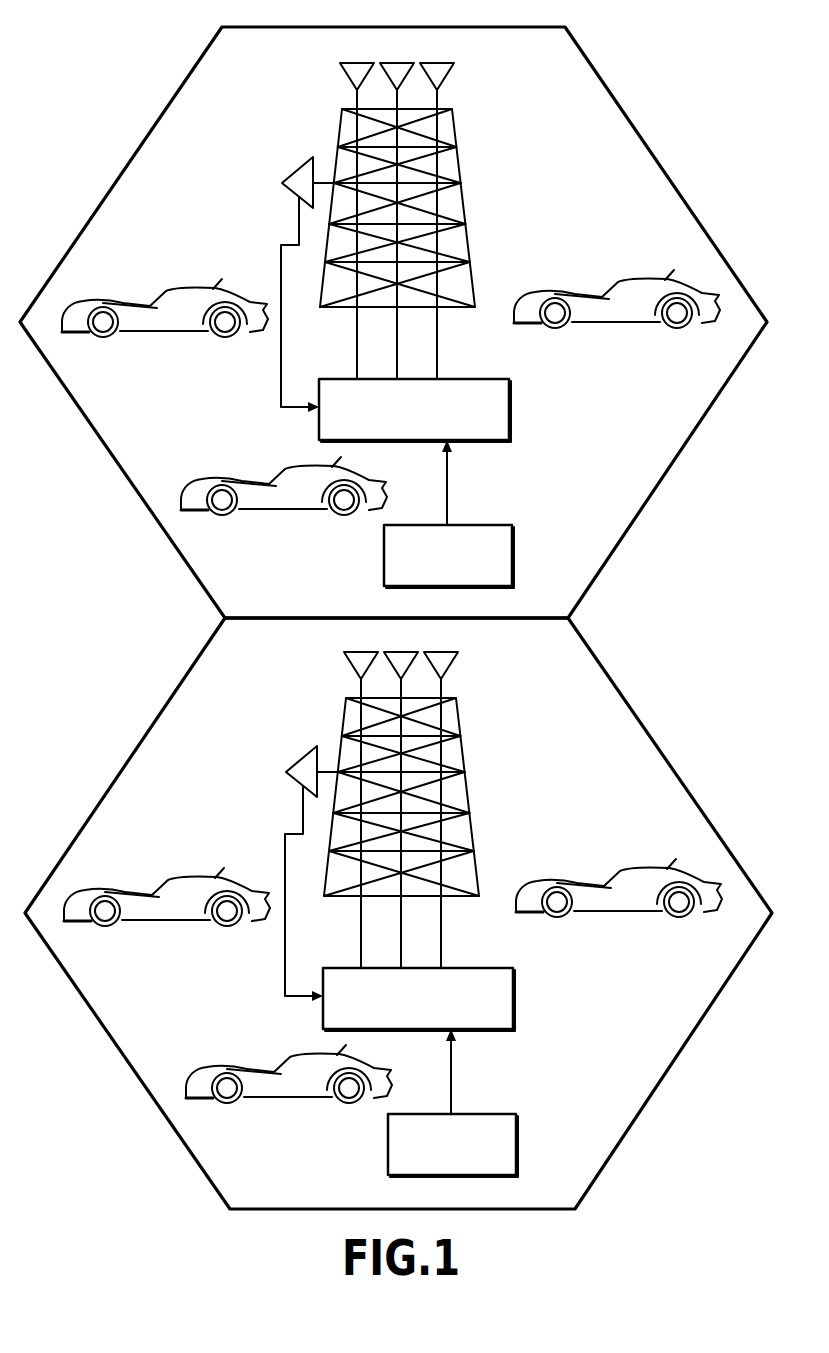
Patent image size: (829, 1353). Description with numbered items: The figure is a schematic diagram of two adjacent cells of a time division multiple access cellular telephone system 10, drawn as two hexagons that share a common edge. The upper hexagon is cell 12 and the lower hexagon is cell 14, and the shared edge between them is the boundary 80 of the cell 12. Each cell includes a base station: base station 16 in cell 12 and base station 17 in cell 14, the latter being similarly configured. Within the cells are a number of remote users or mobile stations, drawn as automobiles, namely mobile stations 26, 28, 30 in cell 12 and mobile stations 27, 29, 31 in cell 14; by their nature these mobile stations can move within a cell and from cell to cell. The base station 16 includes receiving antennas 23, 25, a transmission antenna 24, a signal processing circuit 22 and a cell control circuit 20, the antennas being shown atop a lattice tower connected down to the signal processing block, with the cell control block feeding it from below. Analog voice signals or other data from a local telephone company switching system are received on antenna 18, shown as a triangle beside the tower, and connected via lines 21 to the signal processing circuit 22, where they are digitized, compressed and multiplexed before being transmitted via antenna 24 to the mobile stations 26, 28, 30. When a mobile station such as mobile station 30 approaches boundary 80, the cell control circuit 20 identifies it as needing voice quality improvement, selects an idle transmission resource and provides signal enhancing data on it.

The TDMA cellular telephone system 10 is at (396, 606).
The cell 12 is at (642, 143).
The cell 14 is at (619, 690).
The base station 16 is at (437, 206).
The base station 17 is at (422, 914).
The antenna 18 is at (306, 160).
The cell control circuit 20 is at (490, 525).
The lines 21 is at (279, 366).
The signal processing circuit 22 is at (474, 379).
The receiving antenna 23 is at (361, 63).
The transmission antenna 24 is at (402, 63).
The receiving antenna 25 is at (444, 63).
The mobile station 26 is at (632, 282).
The mobile station 27 is at (638, 872).
The mobile station 28 is at (180, 290).
The mobile station 29 is at (189, 879).
The mobile station 30 is at (302, 469).
The mobile station 31 is at (307, 1058).
The boundary 80 is at (548, 620).